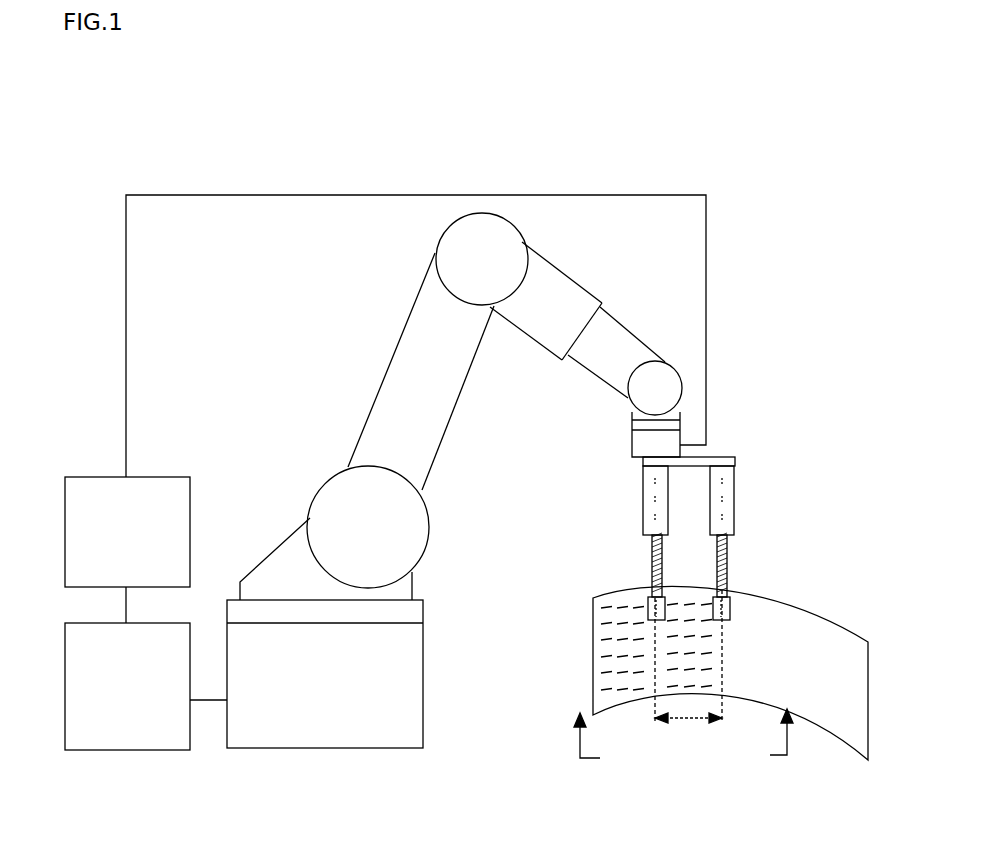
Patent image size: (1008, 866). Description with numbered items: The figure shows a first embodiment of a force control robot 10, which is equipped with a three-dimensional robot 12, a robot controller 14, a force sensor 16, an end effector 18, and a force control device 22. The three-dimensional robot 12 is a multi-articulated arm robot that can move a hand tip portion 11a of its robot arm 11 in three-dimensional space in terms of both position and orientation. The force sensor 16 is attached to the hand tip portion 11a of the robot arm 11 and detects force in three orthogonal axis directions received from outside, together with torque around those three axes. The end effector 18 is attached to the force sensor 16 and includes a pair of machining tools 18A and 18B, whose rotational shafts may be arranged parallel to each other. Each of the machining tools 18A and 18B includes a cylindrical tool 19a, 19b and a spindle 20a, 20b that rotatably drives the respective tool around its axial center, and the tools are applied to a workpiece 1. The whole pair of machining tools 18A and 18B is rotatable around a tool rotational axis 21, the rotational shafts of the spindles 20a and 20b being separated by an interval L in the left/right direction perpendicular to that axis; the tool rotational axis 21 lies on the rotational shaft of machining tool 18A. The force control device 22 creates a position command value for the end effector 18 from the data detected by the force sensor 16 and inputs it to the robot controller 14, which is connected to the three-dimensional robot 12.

The workpiece 1 is at (825, 640).
The force control robot 10 is at (128, 172).
The robot arm 11 is at (410, 357).
The hand tip portion 11a is at (632, 415).
The three-dimensional robot 12 is at (352, 418).
The robot controller 14 is at (148, 706).
The force sensor 16 is at (645, 447).
The end effector 18 is at (792, 480).
The machining tool 18A is at (632, 503).
The machining tool 18B is at (746, 502).
The cylindrical tool 19a is at (650, 608).
The cylindrical tool 19b is at (730, 605).
The spindle 20a is at (648, 492).
The spindle 20b is at (723, 487).
The tool rotational axis 21 is at (657, 695).
The force control device 22 is at (148, 549).